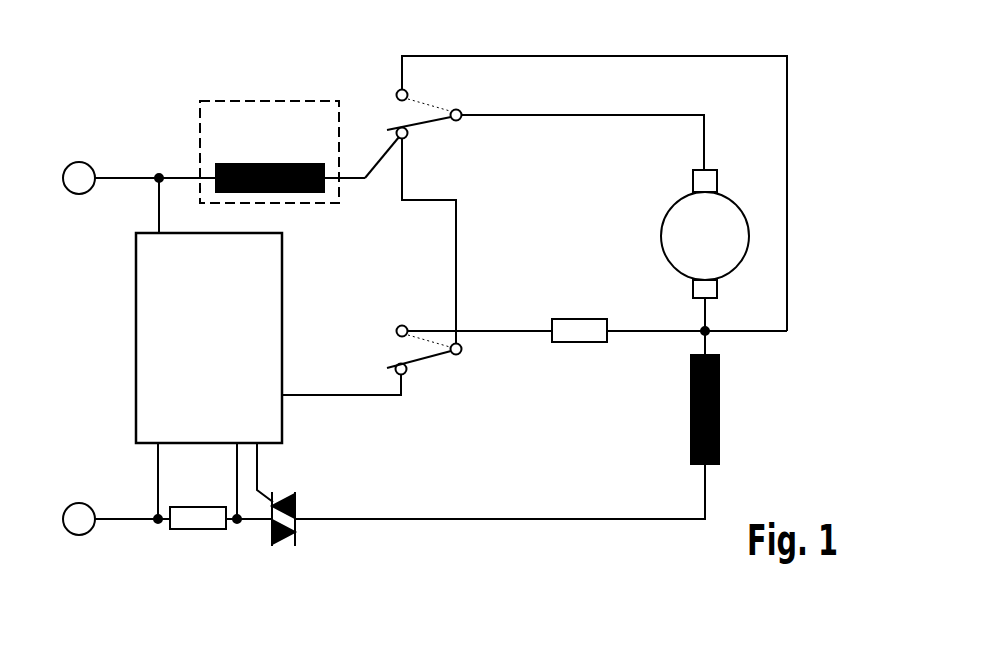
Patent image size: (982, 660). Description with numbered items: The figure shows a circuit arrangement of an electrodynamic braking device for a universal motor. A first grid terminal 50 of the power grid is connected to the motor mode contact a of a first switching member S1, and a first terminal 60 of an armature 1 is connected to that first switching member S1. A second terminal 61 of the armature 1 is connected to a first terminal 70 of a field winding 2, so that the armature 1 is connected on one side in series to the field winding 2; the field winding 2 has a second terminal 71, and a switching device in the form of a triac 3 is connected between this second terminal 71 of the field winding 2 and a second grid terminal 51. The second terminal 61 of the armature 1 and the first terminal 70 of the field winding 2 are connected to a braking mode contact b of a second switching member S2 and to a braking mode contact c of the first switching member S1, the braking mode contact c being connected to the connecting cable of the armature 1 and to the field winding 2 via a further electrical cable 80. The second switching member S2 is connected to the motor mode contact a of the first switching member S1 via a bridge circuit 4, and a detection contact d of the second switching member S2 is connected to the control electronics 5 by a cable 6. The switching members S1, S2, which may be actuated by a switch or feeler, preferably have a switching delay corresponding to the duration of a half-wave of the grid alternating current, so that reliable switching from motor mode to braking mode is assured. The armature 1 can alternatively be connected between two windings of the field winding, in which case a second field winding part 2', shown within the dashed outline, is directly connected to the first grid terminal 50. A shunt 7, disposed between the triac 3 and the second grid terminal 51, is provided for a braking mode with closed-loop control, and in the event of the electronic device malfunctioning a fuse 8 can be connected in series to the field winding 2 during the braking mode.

The armature 1 is at (660, 236).
The field winding 2 is at (679, 409).
The second field winding part 2' is at (299, 152).
The triac 3 is at (285, 547).
The bridge circuit 4 is at (401, 194).
The control electronics 5 is at (135, 337).
The cable 6 is at (342, 396).
The shunt 7 is at (195, 530).
The fuse 8 is at (577, 343).
The first grid terminal 50 is at (79, 162).
The second grid terminal 51 is at (79, 503).
The first terminal of the armature 60 is at (568, 116).
The second terminal of the armature 61 is at (708, 312).
The first terminal of the field winding 70 is at (708, 348).
The second terminal of the field winding 71 is at (708, 480).
The further electrical cable 80 is at (740, 56).
The first switching member S1 is at (457, 121).
The second switching member S2 is at (458, 355).
The motor mode contact a is at (406, 138).
The braking mode contact b is at (402, 325).
The braking mode contact c is at (397, 91).
The detection contact d is at (405, 374).